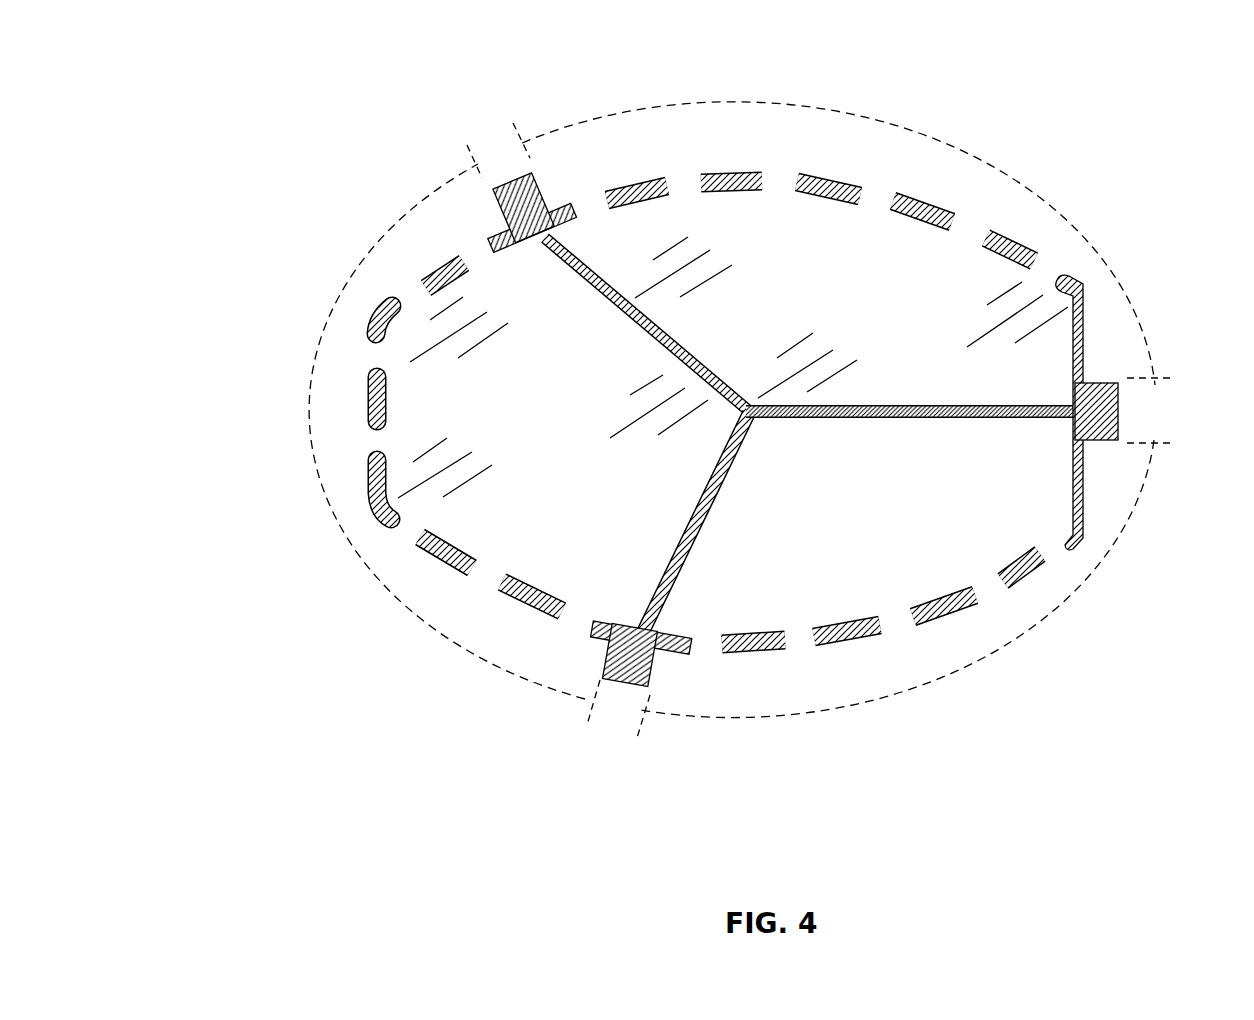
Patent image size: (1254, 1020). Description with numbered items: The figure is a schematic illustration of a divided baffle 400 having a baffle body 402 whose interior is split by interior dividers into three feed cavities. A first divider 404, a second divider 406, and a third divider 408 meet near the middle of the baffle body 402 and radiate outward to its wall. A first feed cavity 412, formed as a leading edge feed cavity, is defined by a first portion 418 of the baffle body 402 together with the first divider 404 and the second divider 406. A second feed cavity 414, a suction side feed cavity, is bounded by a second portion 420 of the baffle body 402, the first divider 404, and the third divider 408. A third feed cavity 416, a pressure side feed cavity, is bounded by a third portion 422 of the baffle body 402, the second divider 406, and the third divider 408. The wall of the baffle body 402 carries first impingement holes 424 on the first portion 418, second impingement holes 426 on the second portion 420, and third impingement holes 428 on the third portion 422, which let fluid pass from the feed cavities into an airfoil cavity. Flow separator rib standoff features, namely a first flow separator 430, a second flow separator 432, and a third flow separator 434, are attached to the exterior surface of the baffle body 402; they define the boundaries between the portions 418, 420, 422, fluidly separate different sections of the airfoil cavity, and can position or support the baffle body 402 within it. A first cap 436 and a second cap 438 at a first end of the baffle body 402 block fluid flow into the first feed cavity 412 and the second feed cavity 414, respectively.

The divided baffle 400 is at (214, 48).
The baffle body 402 is at (1085, 333).
The first divider 404 is at (681, 344).
The second divider 406 is at (713, 507).
The third divider 408 is at (884, 420).
The first feed cavity 412 is at (586, 430).
The second feed cavity 414 is at (896, 311).
The third feed cavity 416 is at (901, 540).
The first portion 418 is at (350, 554).
The second portion 420 is at (989, 158).
The third portion 422 is at (1025, 655).
The first impingement holes 424 is at (479, 579).
The second impingement holes 426 is at (689, 206).
The third impingement holes 428 is at (898, 657).
The first flow separator 430 is at (504, 207).
The second flow separator 432 is at (655, 668).
The third flow separator 434 is at (1118, 413).
The first cap 436 is at (573, 527).
The second cap 438 is at (906, 381).